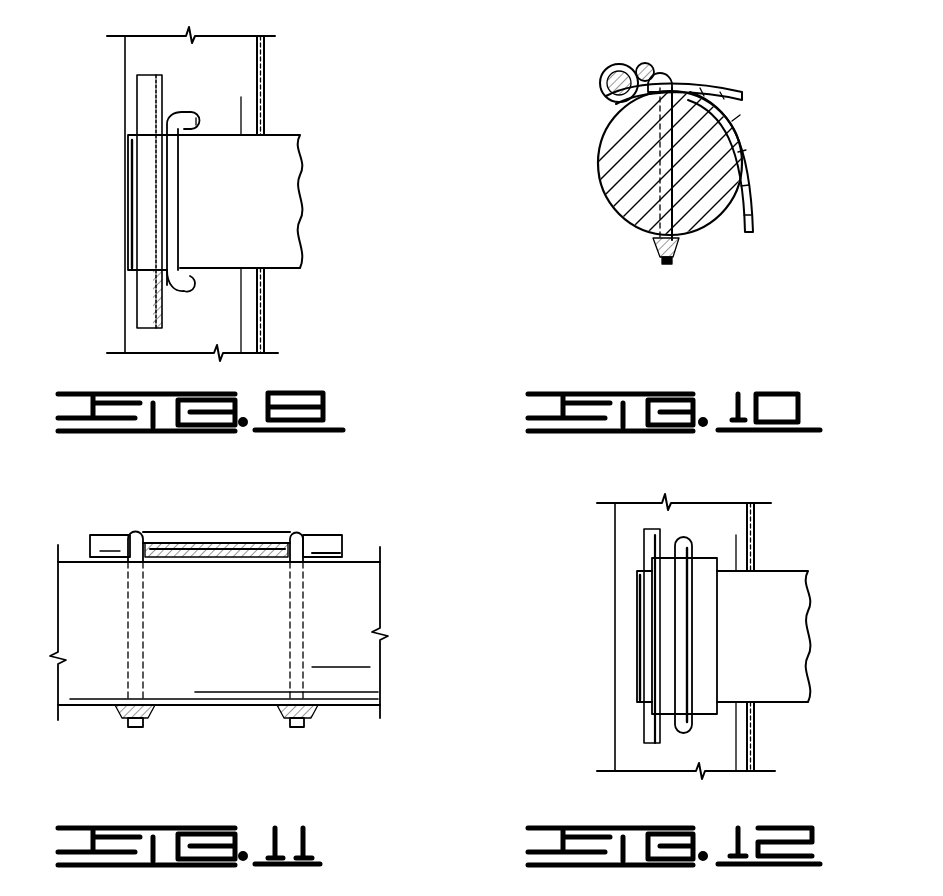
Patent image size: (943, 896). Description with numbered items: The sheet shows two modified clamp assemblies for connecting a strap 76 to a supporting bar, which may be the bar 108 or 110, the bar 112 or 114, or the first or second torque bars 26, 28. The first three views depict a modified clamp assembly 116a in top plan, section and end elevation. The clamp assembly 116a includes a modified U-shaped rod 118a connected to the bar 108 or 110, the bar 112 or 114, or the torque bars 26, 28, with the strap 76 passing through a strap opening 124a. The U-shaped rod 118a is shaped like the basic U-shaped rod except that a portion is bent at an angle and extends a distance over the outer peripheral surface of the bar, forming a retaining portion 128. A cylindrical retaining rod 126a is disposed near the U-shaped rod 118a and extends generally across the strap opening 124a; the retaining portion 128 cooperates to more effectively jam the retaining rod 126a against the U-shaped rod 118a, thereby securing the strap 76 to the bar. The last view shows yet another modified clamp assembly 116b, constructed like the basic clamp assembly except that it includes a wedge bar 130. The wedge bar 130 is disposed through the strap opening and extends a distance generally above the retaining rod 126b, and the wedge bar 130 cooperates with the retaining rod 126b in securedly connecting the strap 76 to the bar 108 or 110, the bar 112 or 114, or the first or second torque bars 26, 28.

In FIG. 9, the strap 76 is at (283, 170).
In FIG. 10, the strap 76 is at (714, 96).
In FIG. 11, the strap 76 is at (213, 570).
In FIG. 12, the strap 76 is at (776, 574).
In FIG. 9, the bar 108 is at (353, 194).
In FIG. 10, the bar 108 is at (635, 161).
In FIG. 11, the bar 108 is at (303, 612).
In FIG. 12, the bar 108 is at (710, 615).
In FIG. 9, the bar 110 is at (353, 194).
In FIG. 10, the bar 110 is at (635, 161).
In FIG. 11, the bar 110 is at (303, 612).
In FIG. 12, the bar 110 is at (710, 615).
In FIG. 9, the bar 112 is at (353, 194).
In FIG. 10, the bar 112 is at (635, 161).
In FIG. 11, the bar 112 is at (303, 612).
In FIG. 12, the bar 112 is at (710, 615).
In FIG. 9, the bar 114 is at (353, 194).
In FIG. 10, the bar 114 is at (635, 161).
In FIG. 11, the bar 114 is at (303, 612).
In FIG. 12, the bar 114 is at (710, 615).
In FIG. 9, the first torque bar 26 is at (353, 194).
In FIG. 10, the first torque bar 26 is at (635, 161).
In FIG. 11, the first torque bar 26 is at (303, 612).
In FIG. 12, the first torque bar 26 is at (710, 615).
In FIG. 9, the second torque bar 28 is at (230, 322).
In FIG. 10, the second torque bar 28 is at (630, 156).
In FIG. 11, the second torque bar 28 is at (448, 553).
In FIG. 12, the second torque bar 28 is at (722, 480).
In FIG. 9, the modified clamp assembly 116a is at (192, 92).
In FIG. 10, the modified clamp assembly 116a is at (663, 52).
In FIG. 11, the modified clamp assembly 116a is at (268, 520).
In FIG. 12, the modified clamp assembly 116b is at (684, 642).
In FIG. 9, the modified U-shaped rod 118a is at (186, 116).
In FIG. 10, the modified U-shaped rod 118a is at (650, 62).
In FIG. 11, the modified U-shaped rod 118a is at (186, 535).
In FIG. 11, the strap opening 124a is at (198, 558).
In FIG. 9, the retaining rod 126a is at (148, 296).
In FIG. 10, the retaining rod 126a is at (605, 93).
In FIG. 11, the retaining rod 126a is at (106, 538).
In FIG. 12, the retaining rod 126b is at (650, 728).
In FIG. 9, the retaining portion 128 is at (175, 171).
In FIG. 10, the retaining portion 128 is at (668, 66).
In FIG. 11, the retaining portion 128 is at (230, 537).
In FIG. 12, the wedge bar 130 is at (700, 682).